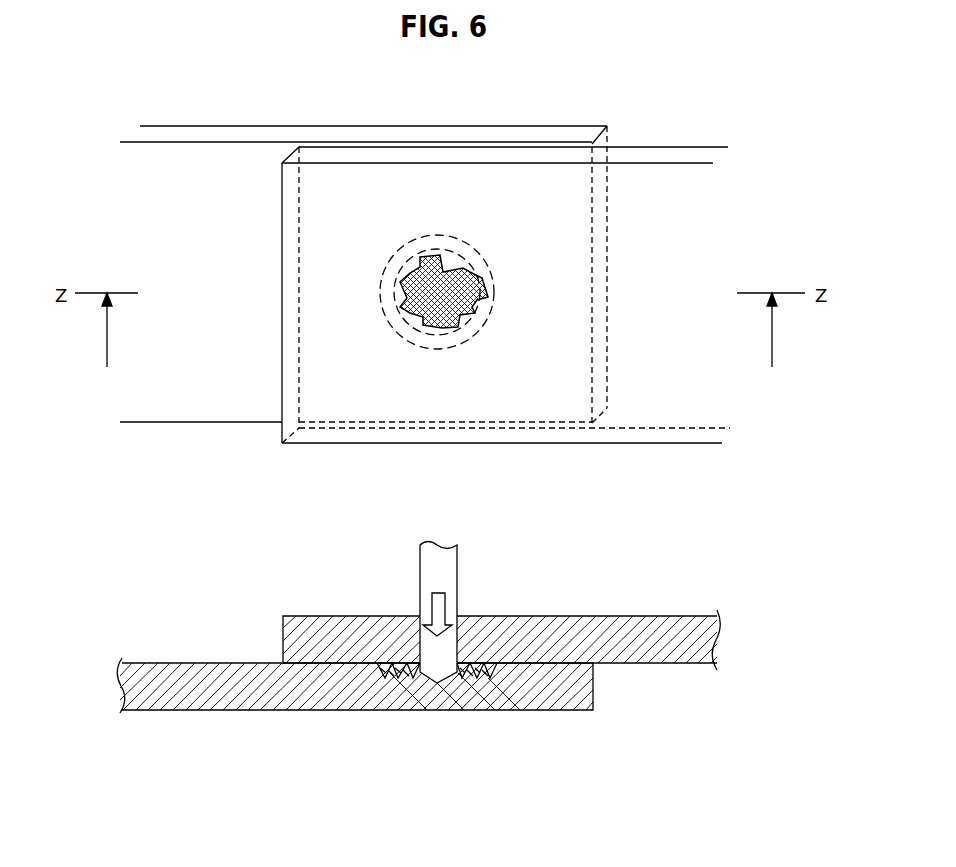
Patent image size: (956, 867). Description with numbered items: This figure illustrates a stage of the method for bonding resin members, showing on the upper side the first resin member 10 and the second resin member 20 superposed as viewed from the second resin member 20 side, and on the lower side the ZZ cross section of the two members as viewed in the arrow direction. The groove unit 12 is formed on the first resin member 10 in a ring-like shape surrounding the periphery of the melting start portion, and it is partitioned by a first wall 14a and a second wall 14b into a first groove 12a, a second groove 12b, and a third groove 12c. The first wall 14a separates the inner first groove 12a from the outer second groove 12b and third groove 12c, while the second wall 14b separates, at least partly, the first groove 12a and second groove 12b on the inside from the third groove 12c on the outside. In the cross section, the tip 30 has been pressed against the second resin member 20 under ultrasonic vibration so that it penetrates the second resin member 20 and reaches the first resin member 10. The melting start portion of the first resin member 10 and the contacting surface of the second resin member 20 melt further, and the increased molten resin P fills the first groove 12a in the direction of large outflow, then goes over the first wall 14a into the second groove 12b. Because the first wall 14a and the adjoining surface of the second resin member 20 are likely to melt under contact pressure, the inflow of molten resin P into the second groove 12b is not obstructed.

The first resin member 10 is at (199, 173).
The second resin member 20 is at (653, 188).
The groove unit 12 is at (440, 434).
The first groove 12a is at (480, 318).
The second groove 12b is at (466, 262).
The third groove 12c is at (462, 234).
The first wall 14a is at (400, 296).
The second wall 14b is at (456, 336).
The tip 30 is at (418, 567).
The molten resin P is at (416, 318).